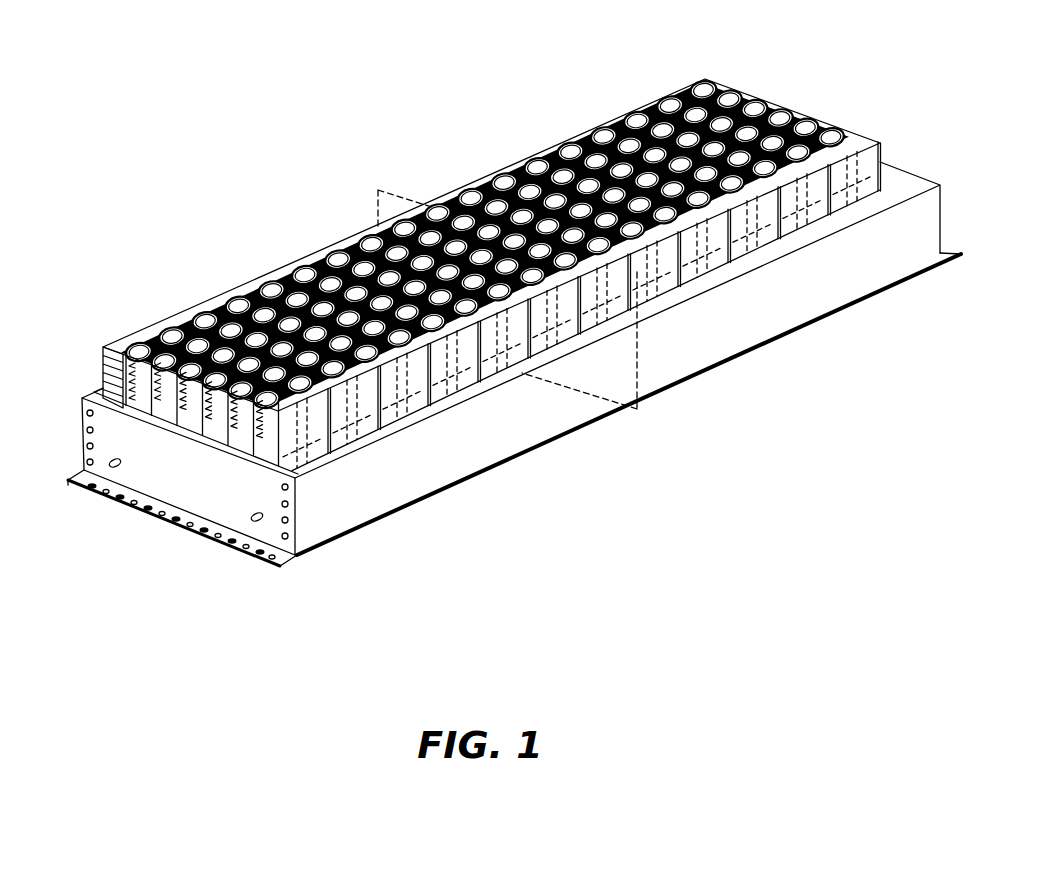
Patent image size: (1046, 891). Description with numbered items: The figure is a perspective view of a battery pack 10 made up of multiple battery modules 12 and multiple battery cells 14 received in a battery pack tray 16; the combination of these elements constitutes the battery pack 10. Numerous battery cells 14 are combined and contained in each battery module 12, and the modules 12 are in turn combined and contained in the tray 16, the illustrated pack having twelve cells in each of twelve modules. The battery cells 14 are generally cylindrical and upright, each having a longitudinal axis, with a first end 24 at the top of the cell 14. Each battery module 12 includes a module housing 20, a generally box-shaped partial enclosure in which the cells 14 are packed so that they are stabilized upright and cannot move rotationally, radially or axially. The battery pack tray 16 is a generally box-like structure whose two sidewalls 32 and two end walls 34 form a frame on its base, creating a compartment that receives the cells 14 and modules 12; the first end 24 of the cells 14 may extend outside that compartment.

The battery pack 10 is at (220, 50).
The battery module 12 is at (622, 116).
The battery cell 14 is at (706, 86).
The battery pack tray 16 is at (298, 557).
The module housing 20 is at (103, 383).
The first end 24 is at (288, 458).
The sidewall 32 is at (525, 427).
The end wall 34 is at (173, 484).